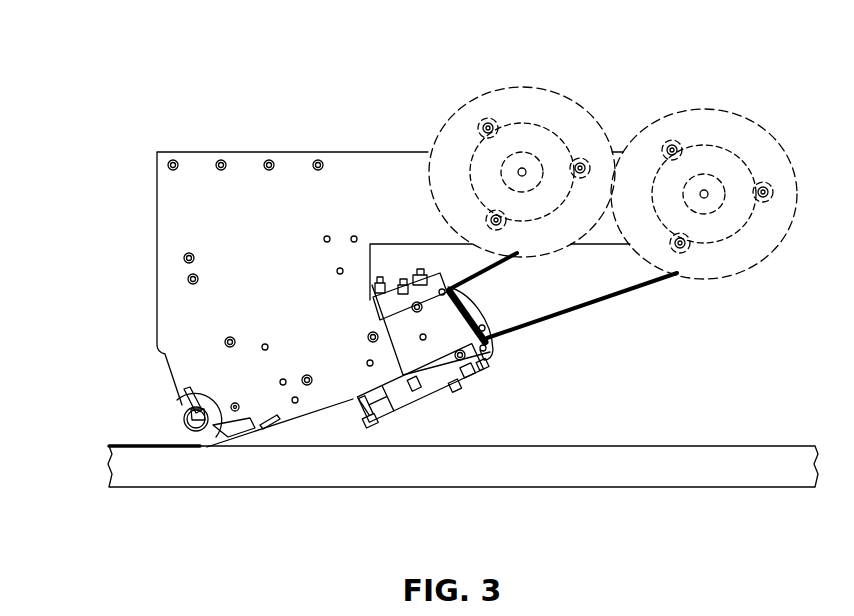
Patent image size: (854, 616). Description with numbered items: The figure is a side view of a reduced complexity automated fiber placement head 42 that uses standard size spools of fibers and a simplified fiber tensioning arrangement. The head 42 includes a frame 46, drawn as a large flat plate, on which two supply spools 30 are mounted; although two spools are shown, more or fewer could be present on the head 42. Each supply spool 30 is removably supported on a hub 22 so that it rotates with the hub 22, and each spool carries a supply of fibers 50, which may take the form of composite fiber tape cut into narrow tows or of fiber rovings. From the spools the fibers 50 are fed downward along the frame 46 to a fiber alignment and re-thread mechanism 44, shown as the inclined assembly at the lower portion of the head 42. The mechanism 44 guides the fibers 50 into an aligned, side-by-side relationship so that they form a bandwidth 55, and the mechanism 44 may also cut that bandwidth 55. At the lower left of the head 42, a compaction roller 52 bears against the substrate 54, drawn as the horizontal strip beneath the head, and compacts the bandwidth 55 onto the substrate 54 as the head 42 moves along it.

The hub 22 is at (522, 166).
The supply spool 30 is at (613, 151).
The AFP head 42 is at (201, 104).
The fiber alignment and re-thread mechanism 44 is at (428, 348).
The frame 46 is at (295, 178).
The fibers 50 is at (493, 272).
The compaction roller 52 is at (199, 434).
The substrate 54 is at (653, 470).
The bandwidth 55 is at (130, 438).